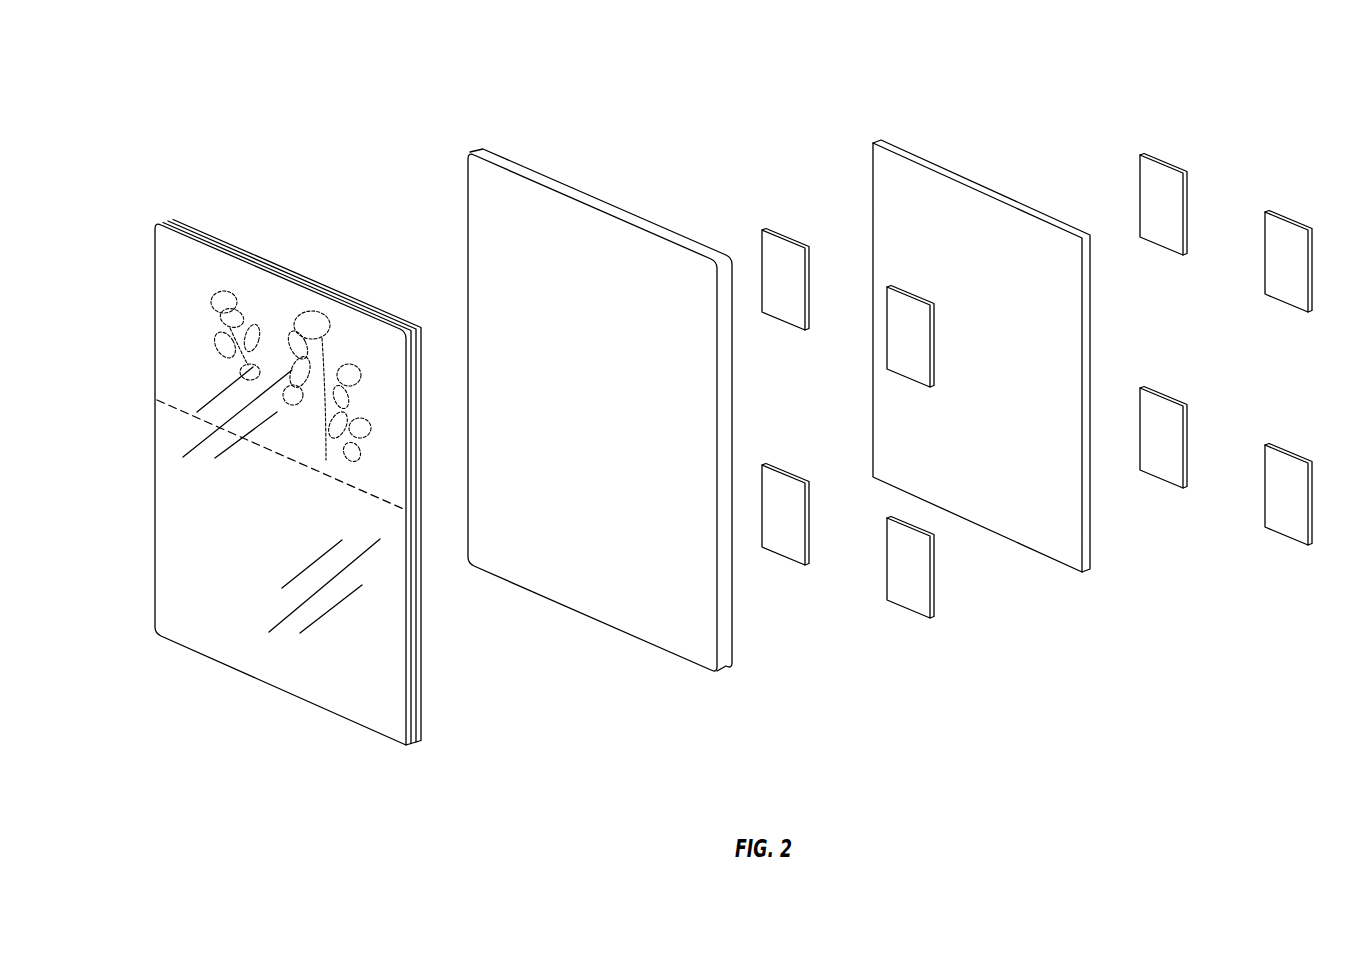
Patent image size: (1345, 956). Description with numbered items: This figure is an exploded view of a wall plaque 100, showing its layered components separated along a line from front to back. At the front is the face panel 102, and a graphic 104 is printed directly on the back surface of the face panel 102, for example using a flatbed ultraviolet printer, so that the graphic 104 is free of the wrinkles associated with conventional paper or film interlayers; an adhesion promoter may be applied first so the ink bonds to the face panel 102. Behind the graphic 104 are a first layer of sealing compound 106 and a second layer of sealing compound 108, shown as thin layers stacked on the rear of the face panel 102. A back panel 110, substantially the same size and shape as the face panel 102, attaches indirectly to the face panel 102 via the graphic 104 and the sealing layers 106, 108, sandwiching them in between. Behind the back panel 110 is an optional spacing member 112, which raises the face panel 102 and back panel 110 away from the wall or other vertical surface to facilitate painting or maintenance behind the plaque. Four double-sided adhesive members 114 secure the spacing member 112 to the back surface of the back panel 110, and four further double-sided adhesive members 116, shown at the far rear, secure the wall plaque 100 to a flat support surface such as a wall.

The wall plaque 100 is at (386, 115).
The face panel 102 is at (353, 698).
The graphic 104 is at (411, 697).
The first layer of sealing compound 106 is at (416, 668).
The second layer of sealing compound 108 is at (421, 645).
The back panel 110 is at (688, 650).
The spacing member 112 is at (1057, 545).
The double-sided adhesive members 114 is at (778, 252).
The double-sided adhesive members 116 is at (1165, 178).